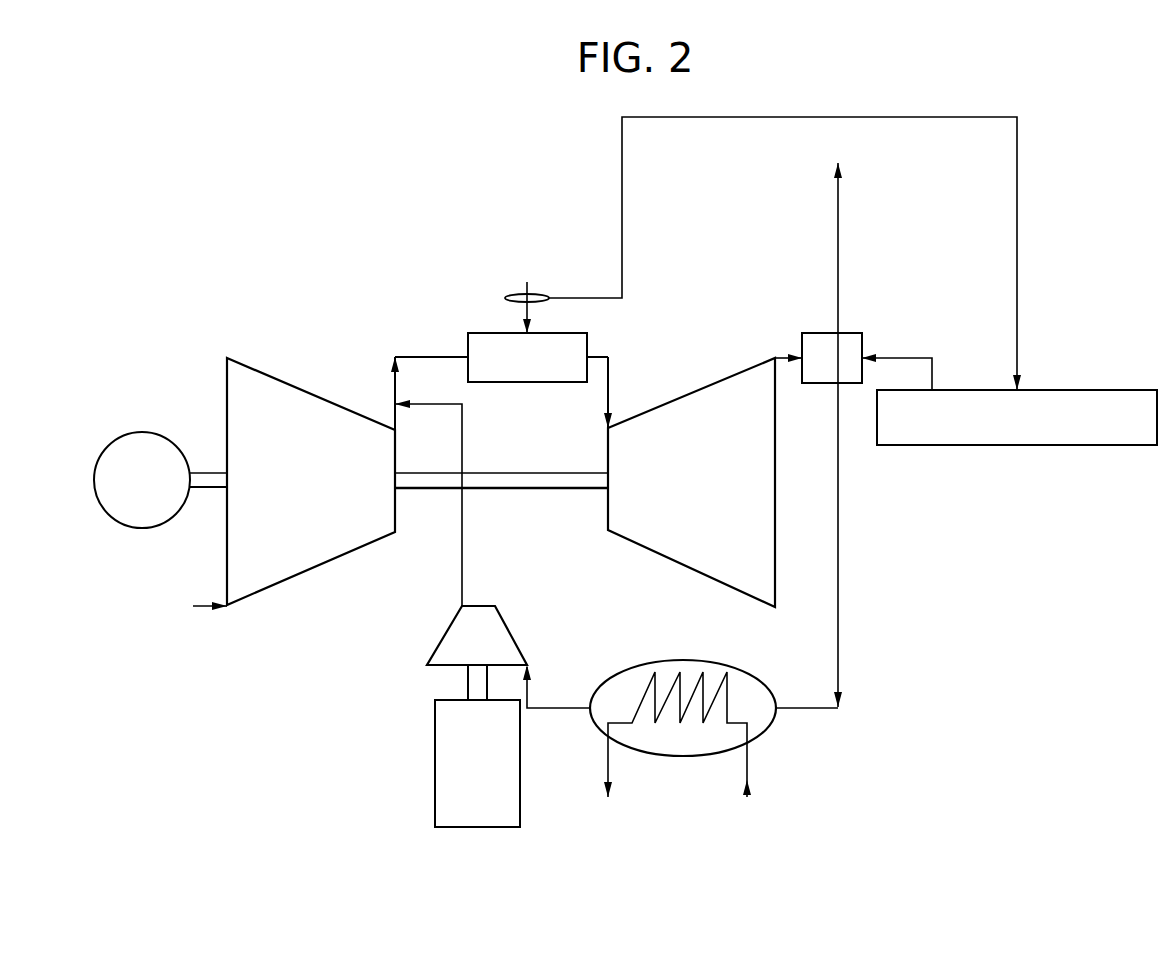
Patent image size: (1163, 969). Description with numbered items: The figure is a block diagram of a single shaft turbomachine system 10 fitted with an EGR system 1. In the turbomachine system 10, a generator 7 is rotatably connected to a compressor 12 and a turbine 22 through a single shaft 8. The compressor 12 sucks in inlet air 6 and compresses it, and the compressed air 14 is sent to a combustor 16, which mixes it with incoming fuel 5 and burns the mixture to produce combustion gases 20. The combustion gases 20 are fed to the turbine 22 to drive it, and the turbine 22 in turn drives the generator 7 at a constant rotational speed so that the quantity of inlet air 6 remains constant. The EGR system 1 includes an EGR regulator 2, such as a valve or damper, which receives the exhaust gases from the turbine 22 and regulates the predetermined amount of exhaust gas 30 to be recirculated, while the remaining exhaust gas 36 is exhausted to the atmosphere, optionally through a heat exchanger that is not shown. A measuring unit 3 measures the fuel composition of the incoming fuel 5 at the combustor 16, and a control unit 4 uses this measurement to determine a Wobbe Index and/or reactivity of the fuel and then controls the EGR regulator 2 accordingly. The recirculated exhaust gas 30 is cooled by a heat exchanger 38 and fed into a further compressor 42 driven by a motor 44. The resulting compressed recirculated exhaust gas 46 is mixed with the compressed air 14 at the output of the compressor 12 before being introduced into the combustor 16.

The EGR system 1 is at (1053, 200).
The EGR regulator 2 is at (865, 340).
The measuring unit 3 is at (505, 288).
The control unit 4 is at (1068, 390).
The incoming fuel 5 is at (531, 290).
The inlet air 6 is at (177, 610).
The generator 7 is at (141, 432).
The single shaft 8 is at (518, 490).
The turbomachine system 10 is at (434, 165).
The compressor 12 is at (283, 380).
The compressed air 14 is at (392, 382).
The combustor 16 is at (476, 333).
The combustion gases 20 is at (609, 385).
The turbine 22 is at (668, 400).
The exhaust gas to be recirculated 30 is at (840, 628).
The remaining exhaust gas 36 is at (836, 202).
The heat exchanger 38 is at (768, 740).
The compressor 42 is at (438, 641).
The motor 44 is at (435, 763).
The compressed recirculated exhaust gas 46 is at (463, 436).